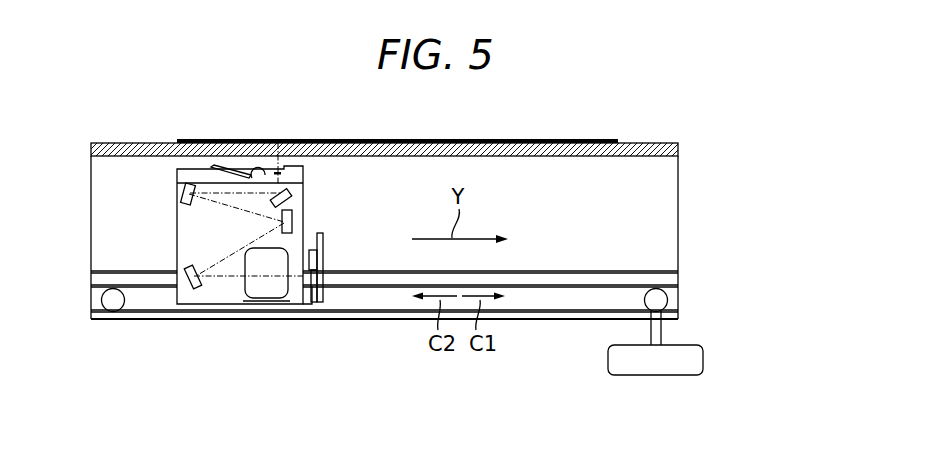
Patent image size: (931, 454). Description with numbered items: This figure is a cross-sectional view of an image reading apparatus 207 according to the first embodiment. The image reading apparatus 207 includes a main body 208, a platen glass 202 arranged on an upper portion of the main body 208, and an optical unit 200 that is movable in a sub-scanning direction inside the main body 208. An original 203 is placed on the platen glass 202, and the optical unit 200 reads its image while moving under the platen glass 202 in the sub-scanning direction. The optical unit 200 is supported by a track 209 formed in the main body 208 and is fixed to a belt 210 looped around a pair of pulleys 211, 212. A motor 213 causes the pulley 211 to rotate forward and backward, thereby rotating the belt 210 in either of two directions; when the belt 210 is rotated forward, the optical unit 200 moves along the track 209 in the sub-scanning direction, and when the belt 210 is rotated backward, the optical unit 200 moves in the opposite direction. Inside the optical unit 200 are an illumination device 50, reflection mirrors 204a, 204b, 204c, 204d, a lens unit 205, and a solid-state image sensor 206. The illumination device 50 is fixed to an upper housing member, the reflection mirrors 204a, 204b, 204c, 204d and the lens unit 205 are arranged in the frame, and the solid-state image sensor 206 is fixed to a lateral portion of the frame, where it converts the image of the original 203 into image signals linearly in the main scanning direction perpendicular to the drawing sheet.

The illumination device 50 is at (251, 152).
The optical unit 200 is at (254, 234).
The platen glass 202 is at (370, 148).
The original 203 is at (325, 140).
The reflection mirror 204a is at (303, 187).
The reflection mirror 204b is at (181, 189).
The reflection mirror 204c is at (303, 214).
The reflection mirror 204d is at (200, 288).
The lens unit 205 is at (267, 297).
The solid-state image sensor 206 is at (325, 268).
The image reading apparatus 207 is at (528, 122).
The main body 208 is at (410, 320).
The track 209 is at (560, 271).
The belt 210 is at (528, 313).
The pulley 211 is at (649, 307).
The pulley 212 is at (113, 306).
The motor 213 is at (608, 368).